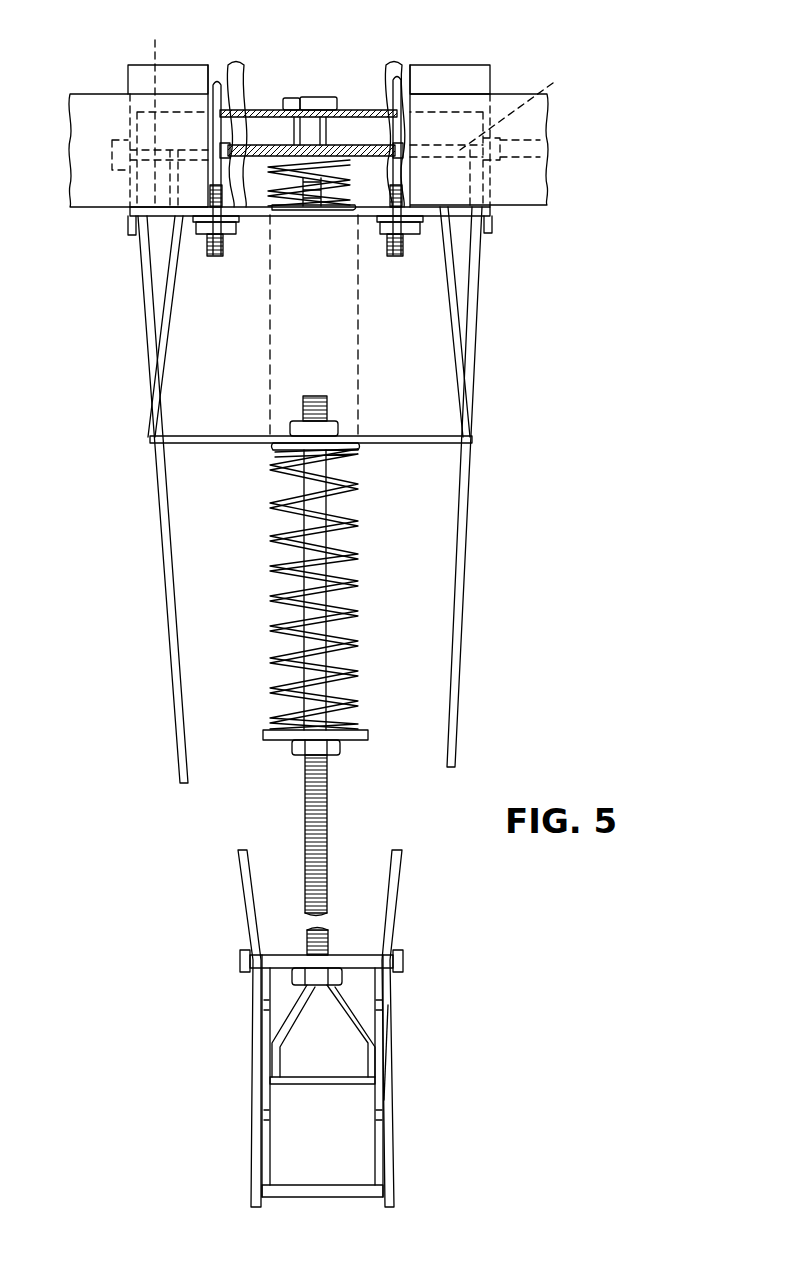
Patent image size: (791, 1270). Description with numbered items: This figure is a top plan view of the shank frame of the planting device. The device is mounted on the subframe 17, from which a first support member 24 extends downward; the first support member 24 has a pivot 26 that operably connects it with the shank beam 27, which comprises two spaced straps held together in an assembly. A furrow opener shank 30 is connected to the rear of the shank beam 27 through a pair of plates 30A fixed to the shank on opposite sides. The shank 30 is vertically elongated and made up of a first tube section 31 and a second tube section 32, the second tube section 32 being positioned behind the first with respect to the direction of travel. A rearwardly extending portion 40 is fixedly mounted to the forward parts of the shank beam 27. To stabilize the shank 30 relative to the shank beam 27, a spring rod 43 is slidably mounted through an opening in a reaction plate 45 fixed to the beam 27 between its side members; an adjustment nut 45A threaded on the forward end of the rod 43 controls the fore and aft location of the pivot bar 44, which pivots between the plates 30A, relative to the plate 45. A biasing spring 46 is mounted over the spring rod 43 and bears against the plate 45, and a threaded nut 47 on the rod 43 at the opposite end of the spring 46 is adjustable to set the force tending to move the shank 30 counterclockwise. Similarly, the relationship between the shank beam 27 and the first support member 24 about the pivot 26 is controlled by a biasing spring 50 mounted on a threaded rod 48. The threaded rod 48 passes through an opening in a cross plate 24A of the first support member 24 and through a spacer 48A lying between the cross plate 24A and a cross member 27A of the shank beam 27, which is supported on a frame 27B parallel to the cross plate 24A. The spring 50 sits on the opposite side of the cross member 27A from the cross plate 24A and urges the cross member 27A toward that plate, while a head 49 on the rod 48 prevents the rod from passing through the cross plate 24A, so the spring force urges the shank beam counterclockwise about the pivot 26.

The subframe 17 is at (113, 101).
The first support member 24 is at (152, 94).
The cross plate 24A is at (248, 90).
The pivot 26 is at (512, 136).
The shank beam 27 is at (165, 707).
The cross member 27A is at (362, 147).
The frame 27B is at (428, 300).
The head 49 is at (314, 98).
The spacer 48A is at (294, 133).
The threaded rod 48 is at (305, 203).
The biasing spring 50 is at (268, 170).
The reaction plate 45 is at (380, 436).
The adjustment nut 45A is at (300, 420).
The biasing spring 46 is at (358, 578).
The threaded nut 47 is at (355, 741).
The spring rod 43 is at (305, 820).
The pivot bar 44 is at (280, 955).
The furrow opener shank 30 is at (272, 1107).
The plates 30A is at (265, 992).
The first tube section 31 is at (297, 1035).
The second tube section 32 is at (344, 1150).
The rearwardly extending portion 40 is at (400, 1008).